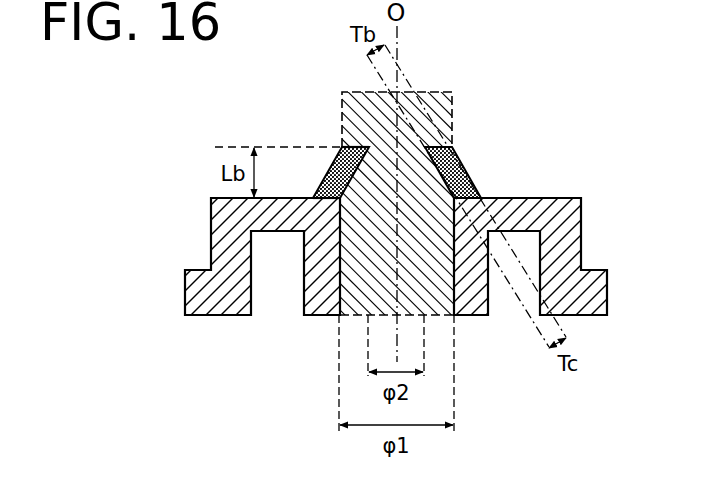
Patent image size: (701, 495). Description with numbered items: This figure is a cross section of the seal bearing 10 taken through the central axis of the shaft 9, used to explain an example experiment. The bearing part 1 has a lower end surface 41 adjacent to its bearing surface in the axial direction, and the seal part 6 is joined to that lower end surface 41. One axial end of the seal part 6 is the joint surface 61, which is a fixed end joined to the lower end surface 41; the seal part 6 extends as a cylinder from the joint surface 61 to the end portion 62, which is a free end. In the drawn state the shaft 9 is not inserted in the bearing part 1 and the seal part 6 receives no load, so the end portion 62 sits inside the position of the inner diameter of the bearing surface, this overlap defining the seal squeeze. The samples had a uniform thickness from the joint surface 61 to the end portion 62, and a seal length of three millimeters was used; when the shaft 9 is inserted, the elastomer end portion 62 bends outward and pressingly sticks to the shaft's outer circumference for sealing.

The bearing part 1 is at (582, 242).
The seal part 6 is at (457, 165).
The shaft 9 is at (448, 112).
The seal bearing 10 is at (574, 151).
The lower end surface 41 is at (533, 197).
The joint surface 61 is at (322, 193).
The end portion 62 is at (341, 146).